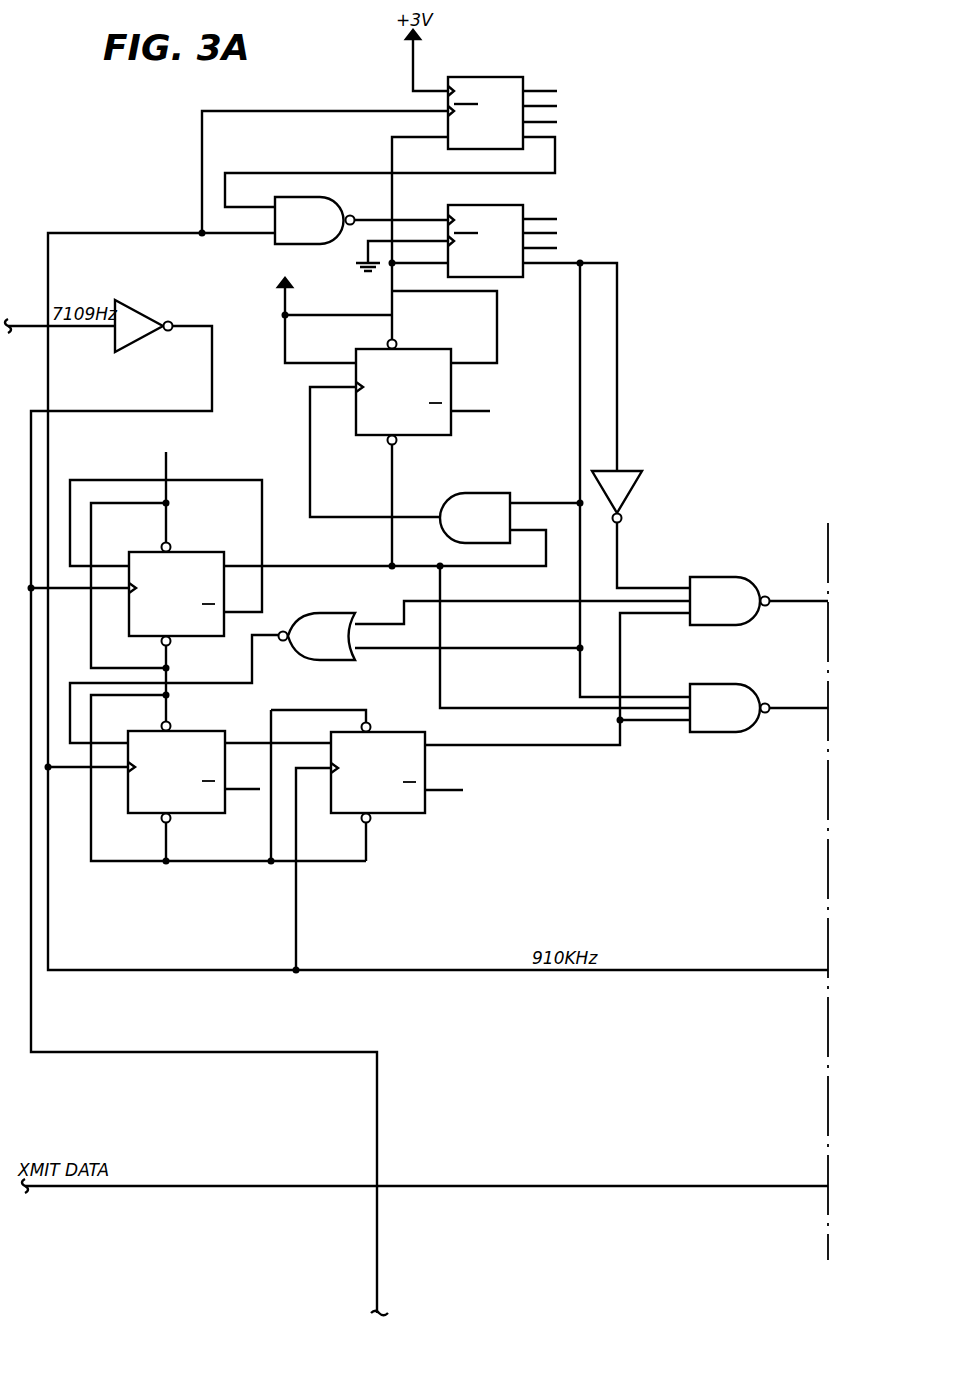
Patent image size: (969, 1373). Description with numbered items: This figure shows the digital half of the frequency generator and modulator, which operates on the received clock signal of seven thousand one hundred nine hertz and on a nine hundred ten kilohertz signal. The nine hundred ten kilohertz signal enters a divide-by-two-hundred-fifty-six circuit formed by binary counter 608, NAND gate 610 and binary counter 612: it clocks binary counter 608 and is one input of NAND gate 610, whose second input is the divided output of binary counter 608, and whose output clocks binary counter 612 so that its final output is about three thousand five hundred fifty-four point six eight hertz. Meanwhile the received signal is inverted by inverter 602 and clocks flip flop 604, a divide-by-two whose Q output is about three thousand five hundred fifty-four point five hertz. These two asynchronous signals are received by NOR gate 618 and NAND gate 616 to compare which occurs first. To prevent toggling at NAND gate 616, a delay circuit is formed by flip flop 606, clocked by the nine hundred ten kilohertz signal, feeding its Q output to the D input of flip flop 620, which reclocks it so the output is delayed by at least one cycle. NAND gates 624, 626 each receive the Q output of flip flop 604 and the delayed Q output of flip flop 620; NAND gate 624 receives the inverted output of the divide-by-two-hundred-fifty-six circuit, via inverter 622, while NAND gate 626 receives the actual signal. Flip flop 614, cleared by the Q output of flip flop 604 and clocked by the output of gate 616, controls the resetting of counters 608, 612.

The inverter 602 is at (140, 320).
The flip flop 604 is at (186, 558).
The flip flop 606 is at (187, 738).
The binary counter 608 is at (498, 63).
The NAND gate 610 is at (282, 244).
The binary counter 612 is at (484, 214).
The flip flop 614 is at (455, 380).
The NAND gate 616 is at (482, 498).
The NOR gate 618 is at (332, 618).
The flip flop 620 is at (406, 738).
The inverter 622 is at (634, 481).
The NAND gate 624 is at (737, 587).
The NAND gate 626 is at (740, 728).